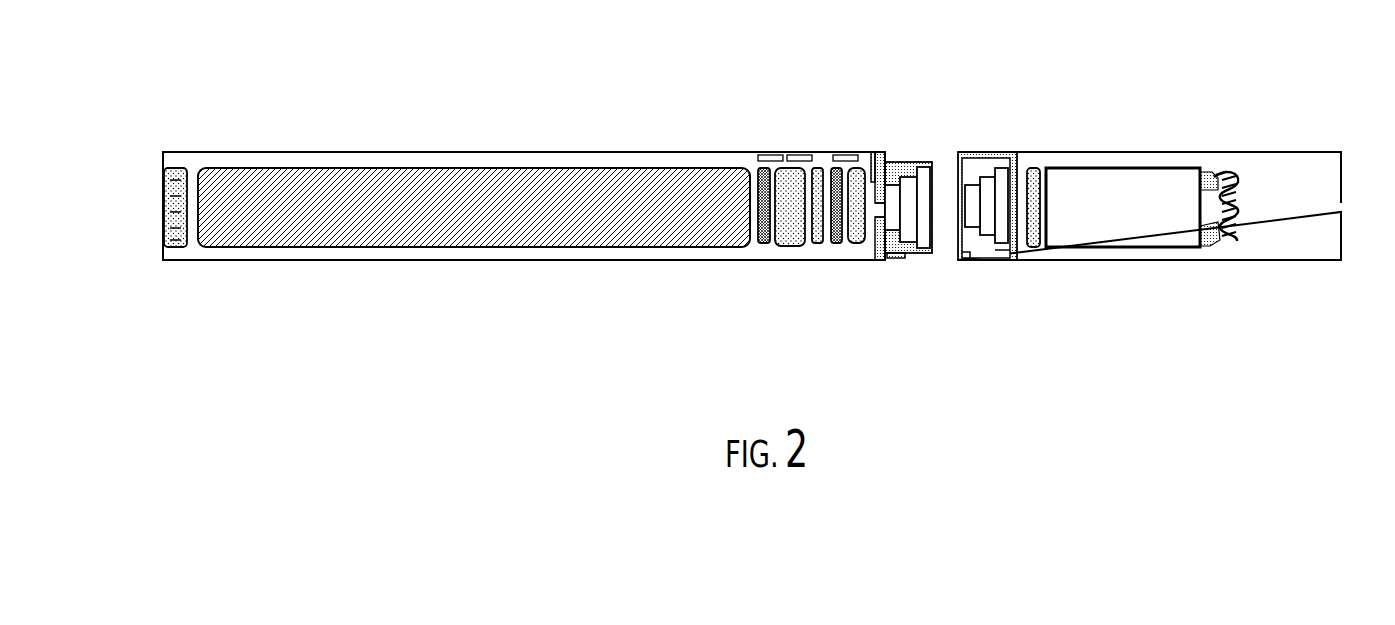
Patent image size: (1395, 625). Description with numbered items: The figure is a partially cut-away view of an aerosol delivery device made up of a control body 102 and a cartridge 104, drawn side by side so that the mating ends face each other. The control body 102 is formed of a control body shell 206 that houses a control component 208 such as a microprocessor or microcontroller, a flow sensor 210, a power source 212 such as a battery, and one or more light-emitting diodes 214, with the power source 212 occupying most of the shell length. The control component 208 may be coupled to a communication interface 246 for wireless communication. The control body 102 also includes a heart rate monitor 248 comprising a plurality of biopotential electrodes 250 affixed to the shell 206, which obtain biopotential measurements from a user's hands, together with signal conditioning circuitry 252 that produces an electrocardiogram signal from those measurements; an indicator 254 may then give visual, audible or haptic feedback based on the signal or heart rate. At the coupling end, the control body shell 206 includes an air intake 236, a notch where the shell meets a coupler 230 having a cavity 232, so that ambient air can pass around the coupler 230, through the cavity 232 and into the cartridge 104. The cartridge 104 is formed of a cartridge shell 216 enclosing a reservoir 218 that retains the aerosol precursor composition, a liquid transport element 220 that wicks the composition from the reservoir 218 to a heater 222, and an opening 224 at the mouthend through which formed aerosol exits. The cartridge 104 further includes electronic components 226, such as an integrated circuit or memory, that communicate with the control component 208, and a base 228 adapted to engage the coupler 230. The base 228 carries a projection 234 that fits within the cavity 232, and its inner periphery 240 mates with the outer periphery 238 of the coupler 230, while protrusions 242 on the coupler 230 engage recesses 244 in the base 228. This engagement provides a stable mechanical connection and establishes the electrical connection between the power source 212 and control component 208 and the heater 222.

The control body 102 is at (237, 115).
The cartridge 104 is at (1162, 118).
The control body shell 206 is at (300, 262).
The control component 208 is at (790, 248).
The flow sensor 210 is at (855, 245).
The power source 212 is at (443, 249).
The light-emitting diodes 214 is at (176, 249).
The cartridge shell 216 is at (1107, 261).
The reservoir 218 is at (1147, 248).
The liquid transport element 220 is at (1220, 246).
The heater 222 is at (1237, 233).
The opening 224 is at (1338, 204).
The electronic components 226 is at (1033, 248).
The base 228 is at (1013, 260).
The coupler 230 is at (908, 258).
The cavity 232 is at (905, 161).
The projection 234 is at (987, 178).
The air intake 236 is at (871, 152).
The outer periphery 238 is at (914, 162).
The inner periphery 240 is at (979, 166).
The protrusions 242 is at (893, 259).
The recesses 244 is at (973, 259).
The communication interface 246 is at (762, 245).
The heart rate monitor 248 is at (795, 103).
The biopotential electrodes 250 is at (845, 155).
The signal conditioning circuitry 252 is at (818, 245).
The indicator 254 is at (837, 245).